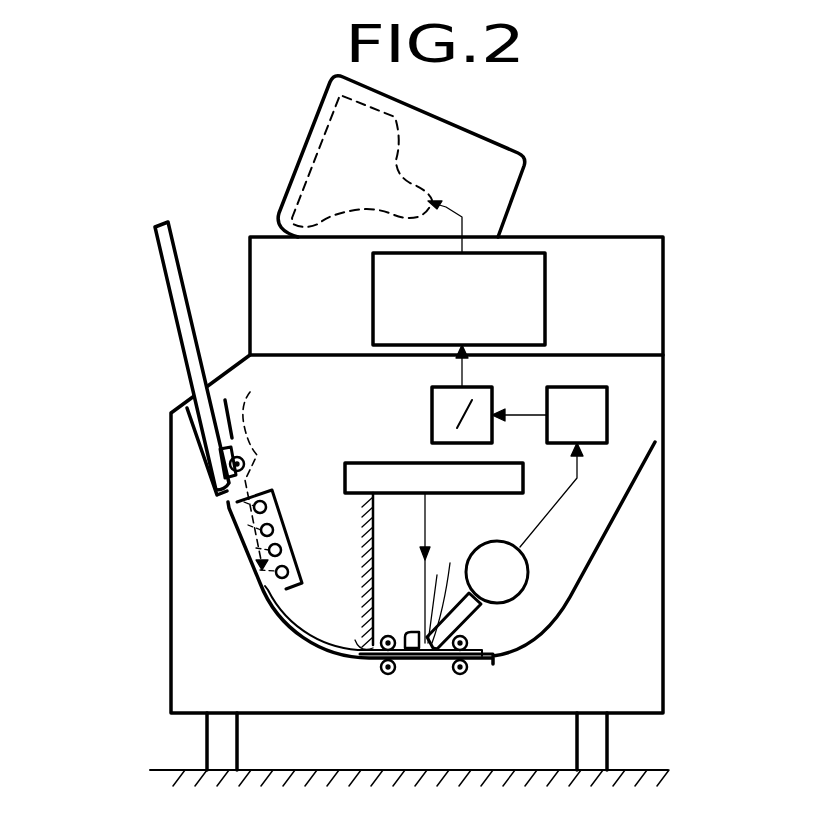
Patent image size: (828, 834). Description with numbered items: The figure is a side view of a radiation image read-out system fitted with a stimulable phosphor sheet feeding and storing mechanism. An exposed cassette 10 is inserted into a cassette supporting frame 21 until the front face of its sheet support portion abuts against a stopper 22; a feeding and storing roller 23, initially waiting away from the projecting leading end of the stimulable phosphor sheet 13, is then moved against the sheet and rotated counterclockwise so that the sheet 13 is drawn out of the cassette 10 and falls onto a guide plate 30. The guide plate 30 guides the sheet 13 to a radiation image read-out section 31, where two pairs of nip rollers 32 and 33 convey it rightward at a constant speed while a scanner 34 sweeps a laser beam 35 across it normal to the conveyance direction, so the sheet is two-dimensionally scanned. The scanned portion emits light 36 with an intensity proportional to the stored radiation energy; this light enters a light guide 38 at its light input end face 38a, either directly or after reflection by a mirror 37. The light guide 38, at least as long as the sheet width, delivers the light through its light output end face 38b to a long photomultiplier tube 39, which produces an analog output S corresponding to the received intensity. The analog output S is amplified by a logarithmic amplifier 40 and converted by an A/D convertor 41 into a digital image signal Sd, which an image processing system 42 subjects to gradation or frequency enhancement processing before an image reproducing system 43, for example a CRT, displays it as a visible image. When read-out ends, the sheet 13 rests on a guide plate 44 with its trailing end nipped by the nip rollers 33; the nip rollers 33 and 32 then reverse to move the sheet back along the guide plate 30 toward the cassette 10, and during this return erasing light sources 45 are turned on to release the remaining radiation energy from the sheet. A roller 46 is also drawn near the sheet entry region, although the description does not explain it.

The cassette 10 is at (176, 294).
The stimulable phosphor sheet 13 is at (365, 730).
The cassette supporting frame 21 is at (198, 433).
The stopper 22 is at (222, 497).
The feeding and storing roller 23 is at (250, 457).
The guide plate 30 is at (245, 565).
The radiation image read-out section 31 is at (413, 690).
The nip rollers 32 is at (380, 648).
The nip rollers 33 is at (468, 641).
The scanner 34 is at (358, 470).
The laser beam 35 is at (427, 522).
The light 36 is at (449, 589).
The mirror 37 is at (415, 632).
The light guide 38 is at (475, 615).
The light input end face 38a is at (433, 655).
The light output end face 38b is at (527, 580).
The long photomultiplier tube 39 is at (520, 565).
The logarithmic amplifier 40 is at (607, 400).
The A/D convertor 41 is at (432, 405).
The image processing system 42 is at (548, 312).
The image reproducing system 43 is at (306, 172).
The guide plate 44 is at (606, 522).
The erasing light sources 45 is at (273, 531).
The roller 46 is at (245, 462).
The analog output S is at (568, 492).
The digital image signal Sd is at (464, 374).